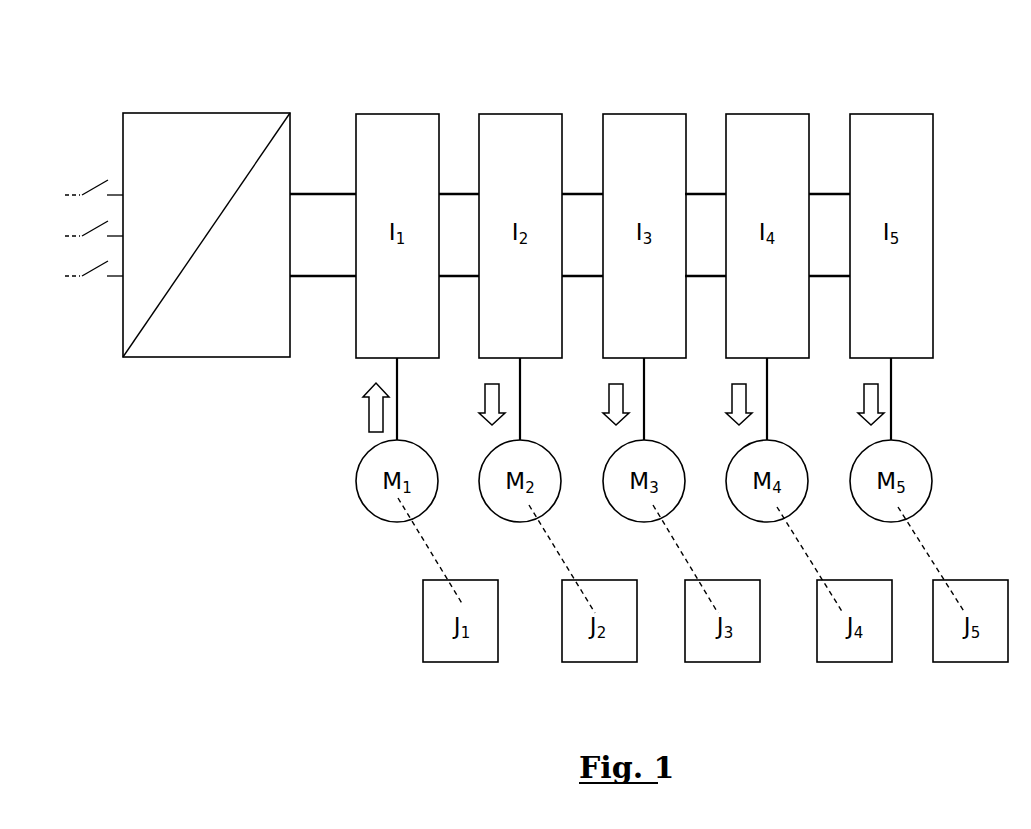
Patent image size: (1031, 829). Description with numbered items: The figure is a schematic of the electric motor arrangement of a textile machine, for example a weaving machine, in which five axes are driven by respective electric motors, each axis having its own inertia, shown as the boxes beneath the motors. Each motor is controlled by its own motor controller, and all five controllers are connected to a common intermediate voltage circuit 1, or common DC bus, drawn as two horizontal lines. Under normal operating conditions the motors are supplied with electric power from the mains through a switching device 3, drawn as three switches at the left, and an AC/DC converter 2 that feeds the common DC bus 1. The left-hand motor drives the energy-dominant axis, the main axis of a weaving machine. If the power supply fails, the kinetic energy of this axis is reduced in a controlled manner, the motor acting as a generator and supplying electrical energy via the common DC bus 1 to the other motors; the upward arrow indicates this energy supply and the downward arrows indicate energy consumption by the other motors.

The common intermediate voltage circuit 1 is at (322, 193).
The AC/DC converter 2 is at (197, 113).
The switching device 3 is at (98, 182).